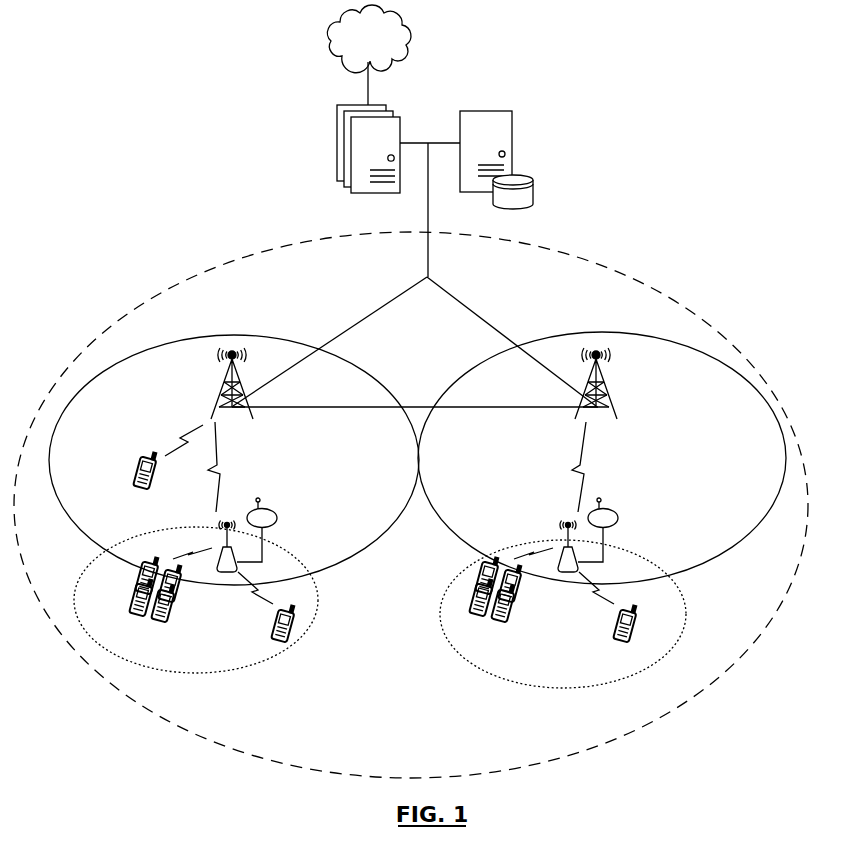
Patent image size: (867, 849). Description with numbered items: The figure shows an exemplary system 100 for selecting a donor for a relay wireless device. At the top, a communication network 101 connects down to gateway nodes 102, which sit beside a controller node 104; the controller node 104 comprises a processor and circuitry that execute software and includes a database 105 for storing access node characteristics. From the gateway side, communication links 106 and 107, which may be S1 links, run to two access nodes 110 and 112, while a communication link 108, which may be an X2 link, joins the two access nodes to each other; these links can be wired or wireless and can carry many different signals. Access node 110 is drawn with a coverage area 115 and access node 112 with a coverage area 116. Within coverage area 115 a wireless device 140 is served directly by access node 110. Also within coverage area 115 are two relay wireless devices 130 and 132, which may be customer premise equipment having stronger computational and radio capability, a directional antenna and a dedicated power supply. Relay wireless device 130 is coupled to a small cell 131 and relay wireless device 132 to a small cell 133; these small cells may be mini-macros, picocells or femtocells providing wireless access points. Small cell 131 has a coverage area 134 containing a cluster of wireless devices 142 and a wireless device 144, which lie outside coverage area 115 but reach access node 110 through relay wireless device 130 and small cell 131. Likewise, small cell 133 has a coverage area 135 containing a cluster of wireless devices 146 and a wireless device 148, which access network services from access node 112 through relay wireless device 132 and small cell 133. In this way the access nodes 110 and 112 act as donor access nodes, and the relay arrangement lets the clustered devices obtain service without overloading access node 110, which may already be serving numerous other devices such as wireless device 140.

The system 100 is at (451, 68).
The communication network 101 is at (352, 45).
The gateway nodes 102 is at (337, 118).
The controller node 104 is at (512, 128).
The database 105 is at (532, 178).
The communication link 106 is at (372, 313).
The communication link 107 is at (467, 304).
The communication link 108 is at (368, 406).
The access node 110 is at (235, 409).
The access node 112 is at (599, 409).
The coverage area 115 is at (185, 338).
The coverage area 116 is at (553, 338).
The relay wireless device 130 is at (271, 505).
The small cell 131 is at (218, 534).
The relay wireless device 132 is at (612, 506).
The small cell 133 is at (562, 538).
The coverage area 134 is at (278, 655).
The coverage area 135 is at (682, 590).
The wireless device 140 is at (130, 475).
The wireless devices 142 is at (278, 641).
The wireless device 144 is at (178, 605).
The wireless devices 146 is at (616, 642).
The wireless device 148 is at (519, 605).